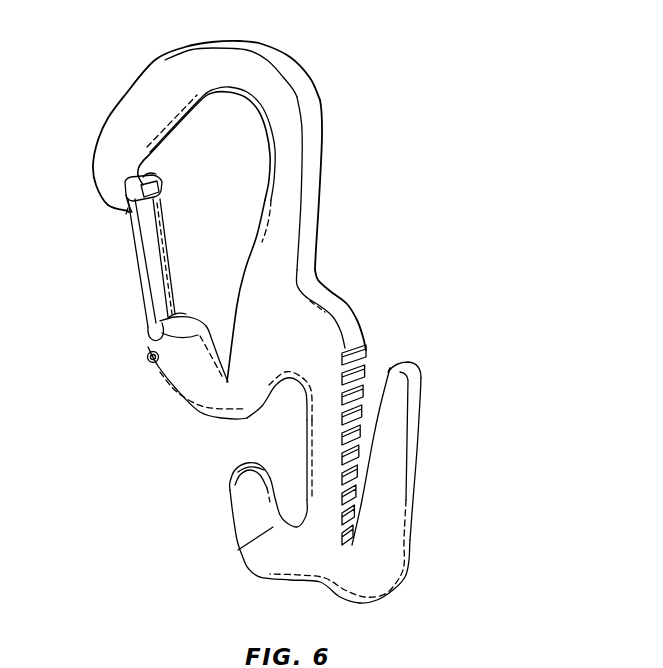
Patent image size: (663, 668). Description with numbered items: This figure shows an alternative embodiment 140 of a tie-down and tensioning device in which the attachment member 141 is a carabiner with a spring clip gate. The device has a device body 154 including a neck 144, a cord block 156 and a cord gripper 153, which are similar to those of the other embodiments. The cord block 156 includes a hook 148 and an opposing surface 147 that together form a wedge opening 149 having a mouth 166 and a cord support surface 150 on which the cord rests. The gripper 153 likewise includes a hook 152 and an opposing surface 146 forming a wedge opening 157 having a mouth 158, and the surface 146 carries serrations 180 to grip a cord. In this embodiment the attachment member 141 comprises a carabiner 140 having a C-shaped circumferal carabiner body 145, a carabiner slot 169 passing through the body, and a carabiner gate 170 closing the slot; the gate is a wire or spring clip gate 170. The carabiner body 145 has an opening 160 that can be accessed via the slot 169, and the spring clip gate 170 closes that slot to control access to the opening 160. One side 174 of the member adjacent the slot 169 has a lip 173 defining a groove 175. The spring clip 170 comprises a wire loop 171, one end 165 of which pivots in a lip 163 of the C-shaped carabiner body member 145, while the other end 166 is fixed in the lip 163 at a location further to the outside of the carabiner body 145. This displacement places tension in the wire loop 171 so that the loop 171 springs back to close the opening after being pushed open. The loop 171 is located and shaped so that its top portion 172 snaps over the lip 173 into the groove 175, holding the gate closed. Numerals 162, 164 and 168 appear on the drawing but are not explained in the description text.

The carabiner 140 is at (456, 123).
The attachment member 141 is at (292, 155).
The neck 144 is at (298, 312).
The carabiner body 145 is at (238, 57).
The opposing surface 146 is at (343, 407).
The opposing surface 147 is at (306, 455).
The hook 148 is at (237, 493).
The wedge opening 149 is at (280, 497).
The cord support surface 150 is at (244, 553).
The hook 152 is at (397, 427).
The cord gripper 153 is at (383, 535).
The device body 154 is at (350, 487).
The cord block 156 is at (263, 570).
The wedge opening 157 is at (373, 405).
The mouth 158 is at (381, 368).
The opening 160 is at (252, 150).
The base 162 is at (187, 380).
The lip 163 is at (188, 339).
The inner surface 164 is at (245, 280).
The end of wire loop 165 is at (184, 316).
The mouth / other end of wire loop 166 is at (148, 360).
The notch 168 is at (232, 382).
The carabiner slot 169 is at (141, 291).
The spring clip gate 170 is at (164, 218).
The wire loop 171 is at (140, 250).
The top portion of loop 172 is at (146, 178).
The lip 173 is at (160, 193).
The side 174 is at (140, 203).
The groove 175 is at (156, 168).
The serrations 180 is at (366, 370).